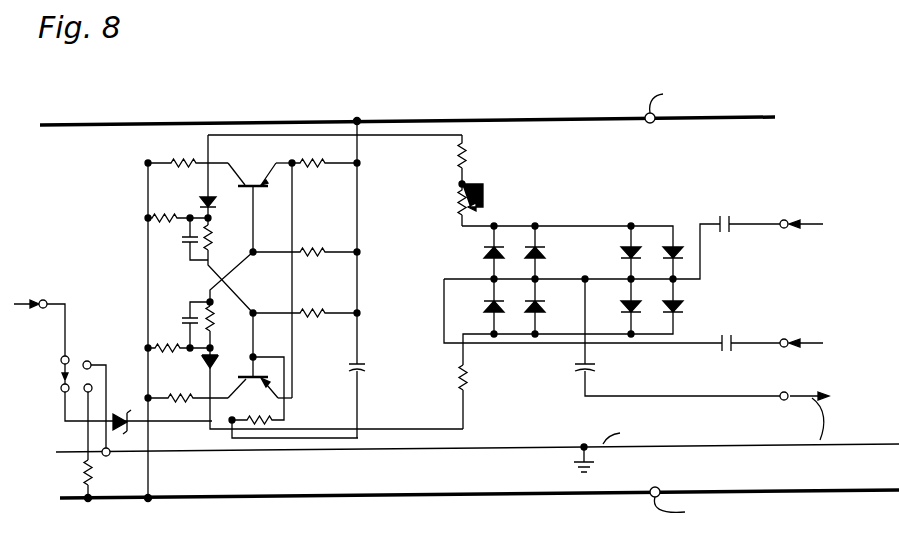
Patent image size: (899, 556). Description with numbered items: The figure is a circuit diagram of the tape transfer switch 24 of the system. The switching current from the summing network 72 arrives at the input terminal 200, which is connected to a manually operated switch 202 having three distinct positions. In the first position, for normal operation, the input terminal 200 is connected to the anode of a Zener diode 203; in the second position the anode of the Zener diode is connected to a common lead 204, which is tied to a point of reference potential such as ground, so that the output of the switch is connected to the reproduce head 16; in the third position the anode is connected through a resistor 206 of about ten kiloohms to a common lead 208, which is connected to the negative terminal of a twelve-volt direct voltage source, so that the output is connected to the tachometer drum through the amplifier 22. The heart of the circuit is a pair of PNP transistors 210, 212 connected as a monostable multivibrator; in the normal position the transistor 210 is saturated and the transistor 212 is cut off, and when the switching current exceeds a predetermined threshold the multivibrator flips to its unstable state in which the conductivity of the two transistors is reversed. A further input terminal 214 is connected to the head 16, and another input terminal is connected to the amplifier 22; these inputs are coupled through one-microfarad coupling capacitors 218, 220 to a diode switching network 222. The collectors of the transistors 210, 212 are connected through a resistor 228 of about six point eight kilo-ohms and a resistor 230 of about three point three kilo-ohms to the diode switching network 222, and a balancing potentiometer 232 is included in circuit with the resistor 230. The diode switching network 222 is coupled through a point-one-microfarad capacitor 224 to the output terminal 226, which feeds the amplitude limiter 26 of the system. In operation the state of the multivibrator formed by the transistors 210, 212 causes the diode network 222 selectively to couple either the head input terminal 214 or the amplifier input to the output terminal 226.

The tape transfer switch 24 is at (453, 267).
The switching current from summing network 72 is at (47, 300).
The input terminal 200 is at (46, 309).
The manually operated switch 202 is at (73, 380).
The Zener diode 203 is at (122, 437).
The common lead 204 is at (553, 450).
The resistor 206 is at (84, 477).
The common lead 208 is at (585, 496).
The PNP transistor 210 is at (252, 188).
The PNP transistor 212 is at (247, 372).
The input terminal 214 is at (789, 230).
The reproduce head 16 is at (798, 212).
The coupling capacitor 218 is at (719, 220).
The coupling capacitor 220 is at (722, 337).
The amplifier 22 is at (810, 340).
The diode switching network 222 is at (601, 267).
The capacitor 224 is at (579, 374).
The output terminal 226 is at (782, 392).
The amplitude limiter 26 is at (752, 443).
The resistor 228 is at (470, 392).
The resistor 230 is at (471, 168).
The balancing potentiometer 232 is at (459, 206).